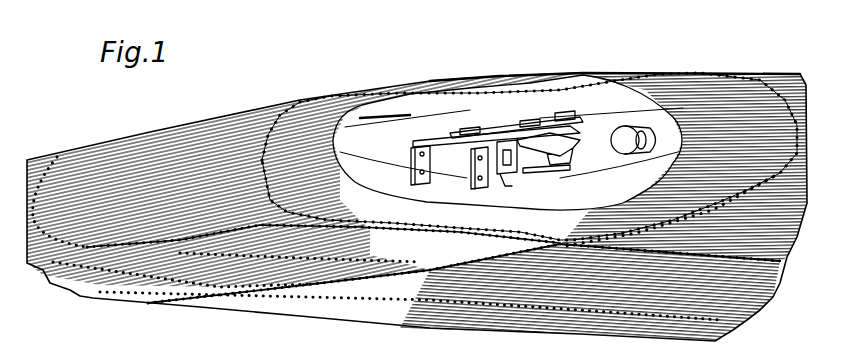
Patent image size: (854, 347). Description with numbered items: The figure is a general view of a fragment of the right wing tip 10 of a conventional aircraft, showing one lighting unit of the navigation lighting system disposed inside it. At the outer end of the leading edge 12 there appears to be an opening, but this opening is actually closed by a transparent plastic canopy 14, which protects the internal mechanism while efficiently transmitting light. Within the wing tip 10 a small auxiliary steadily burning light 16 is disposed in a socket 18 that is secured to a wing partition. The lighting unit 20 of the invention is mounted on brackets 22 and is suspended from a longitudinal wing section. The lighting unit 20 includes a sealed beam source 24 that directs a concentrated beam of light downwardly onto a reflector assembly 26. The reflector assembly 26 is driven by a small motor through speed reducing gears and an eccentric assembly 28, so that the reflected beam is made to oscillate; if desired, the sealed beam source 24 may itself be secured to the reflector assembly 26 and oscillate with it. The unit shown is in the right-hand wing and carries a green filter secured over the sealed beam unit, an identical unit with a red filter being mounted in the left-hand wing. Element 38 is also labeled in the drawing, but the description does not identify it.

The right wing tip 10 is at (140, 160).
The leading edge 12 is at (733, 103).
The transparent plastic canopy 14 is at (380, 117).
The auxiliary steadily burning light 16 is at (627, 128).
The socket 18 is at (650, 125).
The lighting unit 20 is at (483, 122).
The brackets 22 is at (415, 145).
The sealed beam source 24 is at (550, 113).
The reflector assembly 26 is at (554, 160).
The eccentric assembly 28 is at (507, 177).
The clamp body 38 is at (560, 117).